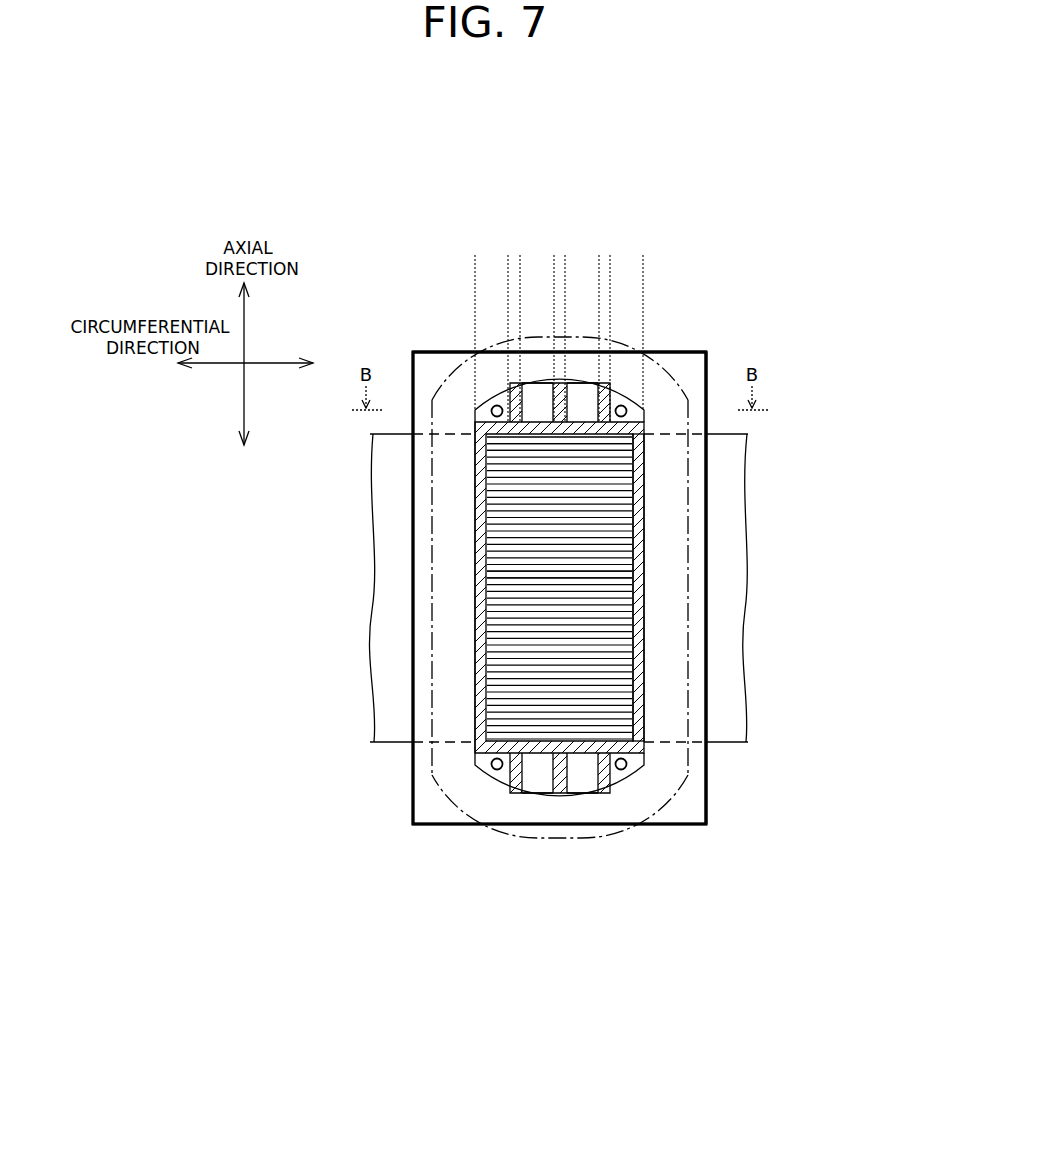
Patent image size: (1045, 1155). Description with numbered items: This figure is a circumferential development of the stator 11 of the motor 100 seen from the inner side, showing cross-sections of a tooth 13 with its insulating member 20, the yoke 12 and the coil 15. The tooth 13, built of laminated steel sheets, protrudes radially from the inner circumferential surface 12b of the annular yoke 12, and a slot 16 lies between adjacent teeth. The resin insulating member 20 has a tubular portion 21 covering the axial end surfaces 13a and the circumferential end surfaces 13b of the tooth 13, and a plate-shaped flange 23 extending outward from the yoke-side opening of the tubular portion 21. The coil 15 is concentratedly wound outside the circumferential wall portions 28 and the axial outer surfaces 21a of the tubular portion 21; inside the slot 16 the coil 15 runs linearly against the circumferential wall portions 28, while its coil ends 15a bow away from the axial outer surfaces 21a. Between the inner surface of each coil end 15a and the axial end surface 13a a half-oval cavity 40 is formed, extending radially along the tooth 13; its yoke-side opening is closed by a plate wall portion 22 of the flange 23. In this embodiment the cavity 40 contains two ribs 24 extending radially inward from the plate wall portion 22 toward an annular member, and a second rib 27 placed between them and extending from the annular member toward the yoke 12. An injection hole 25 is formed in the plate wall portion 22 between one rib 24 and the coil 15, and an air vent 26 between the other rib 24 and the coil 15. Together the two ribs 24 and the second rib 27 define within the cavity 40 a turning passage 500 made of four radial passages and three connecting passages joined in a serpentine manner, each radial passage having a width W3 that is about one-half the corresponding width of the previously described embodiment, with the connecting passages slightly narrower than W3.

The motor 100 is at (845, 138).
The stator 11 is at (738, 203).
The yoke 12 is at (747, 463).
The inner circumferential surface of the yoke 12b is at (397, 633).
The tooth 13 is at (540, 633).
The axial end surface of the tooth 13a is at (487, 436).
The circumferential end surface of the tooth 13b is at (486, 573).
The coil 15 is at (431, 530).
The coil end 15a is at (417, 340).
The slot 16 is at (450, 477).
The insulating member 20 is at (707, 787).
The tubular portion 21 is at (646, 650).
The axial outer surface of the tubular portion 21a is at (660, 373).
The plate wall portion 22 is at (697, 352).
The plate-shaped flange 23 is at (707, 546).
The rib 24 is at (529, 388).
The injection hole 25 is at (500, 396).
The air vent 26 is at (640, 413).
The second rib 27 is at (578, 404).
The circumferential wall portion 28 is at (647, 590).
The cavity 40 is at (538, 405).
The turning passage 500 is at (607, 397).
The width of the radial passage W3 is at (642, 263).